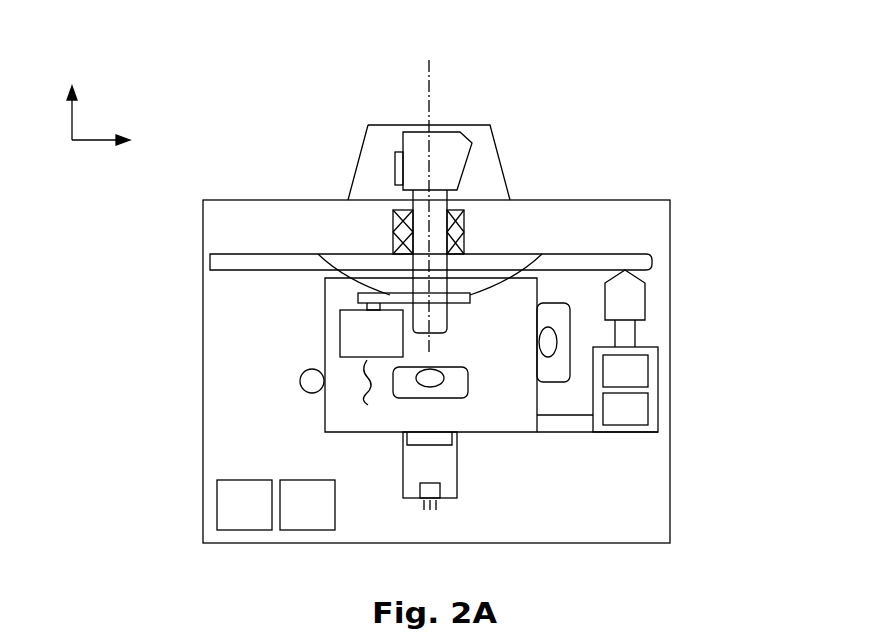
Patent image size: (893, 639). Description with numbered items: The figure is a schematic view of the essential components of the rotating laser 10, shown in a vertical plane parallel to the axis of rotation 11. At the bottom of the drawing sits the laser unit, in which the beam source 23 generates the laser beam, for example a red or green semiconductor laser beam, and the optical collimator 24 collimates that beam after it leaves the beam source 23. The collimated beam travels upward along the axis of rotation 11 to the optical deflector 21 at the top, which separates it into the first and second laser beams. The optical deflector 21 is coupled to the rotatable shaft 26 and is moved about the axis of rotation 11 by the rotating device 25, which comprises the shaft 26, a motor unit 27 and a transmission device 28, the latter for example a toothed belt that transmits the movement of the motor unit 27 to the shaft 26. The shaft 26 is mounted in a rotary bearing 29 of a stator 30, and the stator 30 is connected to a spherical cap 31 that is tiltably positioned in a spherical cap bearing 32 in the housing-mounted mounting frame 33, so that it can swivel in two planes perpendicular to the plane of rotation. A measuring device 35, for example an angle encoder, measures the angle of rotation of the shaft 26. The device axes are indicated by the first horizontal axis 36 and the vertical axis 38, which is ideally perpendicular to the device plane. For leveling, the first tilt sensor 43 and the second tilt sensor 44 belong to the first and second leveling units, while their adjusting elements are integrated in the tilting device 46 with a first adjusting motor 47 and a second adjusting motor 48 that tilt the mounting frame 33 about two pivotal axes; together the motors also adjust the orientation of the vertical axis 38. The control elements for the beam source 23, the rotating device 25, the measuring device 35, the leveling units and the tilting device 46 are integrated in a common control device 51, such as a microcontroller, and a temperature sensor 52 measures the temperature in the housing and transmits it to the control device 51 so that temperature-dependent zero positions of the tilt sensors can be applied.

The rotating laser 10 is at (670, 95).
The axis of rotation 11 is at (429, 78).
The optical deflector 21 is at (458, 158).
The beam source 23 is at (441, 498).
The optical collimator 24 is at (432, 438).
The rotating device 25 is at (353, 394).
The rotatable shaft 26 is at (450, 335).
The motor unit 27 is at (355, 337).
The transmission device 28 is at (358, 300).
The rotary bearing 29 is at (393, 233).
The stator 30 is at (515, 418).
The spherical cap 31 is at (523, 262).
The spherical cap bearing 32 is at (670, 330).
The mounting frame 33 is at (598, 256).
The measuring device 35 is at (478, 303).
The first horizontal axis 36 is at (107, 159).
The vertical axis 38 is at (55, 104).
The first tilt sensor 43 is at (440, 382).
The second tilt sensor 44 is at (305, 393).
The tilting device 46 is at (555, 340).
The first adjusting motor 47 is at (639, 385).
The second adjusting motor 48 is at (639, 423).
The control device 51 is at (321, 520).
The temperature sensor 52 is at (258, 520).